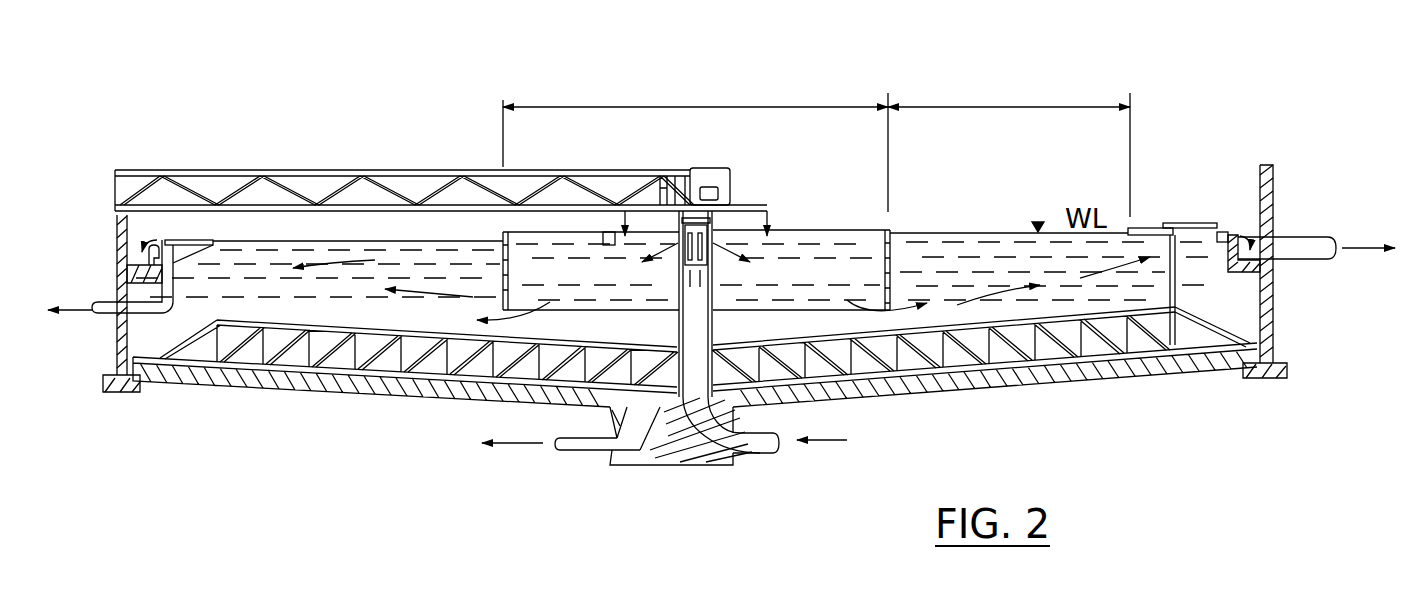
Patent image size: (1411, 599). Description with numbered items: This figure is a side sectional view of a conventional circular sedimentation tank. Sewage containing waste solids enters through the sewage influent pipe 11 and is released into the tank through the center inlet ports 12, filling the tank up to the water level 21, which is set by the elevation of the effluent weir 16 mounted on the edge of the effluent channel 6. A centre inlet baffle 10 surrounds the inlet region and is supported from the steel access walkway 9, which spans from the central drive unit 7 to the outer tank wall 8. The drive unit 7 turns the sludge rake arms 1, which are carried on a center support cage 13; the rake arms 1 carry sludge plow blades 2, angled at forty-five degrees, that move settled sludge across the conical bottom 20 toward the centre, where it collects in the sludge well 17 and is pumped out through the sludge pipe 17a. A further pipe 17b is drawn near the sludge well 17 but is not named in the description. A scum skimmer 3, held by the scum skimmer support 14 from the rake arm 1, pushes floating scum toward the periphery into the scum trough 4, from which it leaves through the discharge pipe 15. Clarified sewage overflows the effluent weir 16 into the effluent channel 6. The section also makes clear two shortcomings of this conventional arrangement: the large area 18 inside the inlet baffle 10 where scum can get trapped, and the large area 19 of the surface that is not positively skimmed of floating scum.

The sludge rake arms 1 is at (293, 322).
The sludge plow blades 2 is at (332, 374).
The scum skimmer 3 is at (1190, 224).
The scum trough 4 is at (196, 259).
The effluent channel 6 is at (134, 262).
The central drive unit 7 is at (690, 175).
The outer tank wall 8 is at (1274, 301).
The steel access walkway 9 is at (330, 168).
The centre inlet baffle 10 is at (890, 248).
The sewage influent pipe 11 is at (762, 455).
The center inlet ports 12 is at (678, 258).
The center support cage 13 is at (715, 325).
The scum skimmer support 14 is at (1168, 290).
The discharge pipe 15 is at (107, 302).
The effluent weir 16 is at (1232, 232).
The sludge well 17 is at (669, 465).
The sludge pipe 17a is at (577, 452).
The feed nozzle 17b is at (603, 240).
The large area where scum can get trapped 18 is at (695, 145).
The large area not positively skimmed 19 is at (1009, 147).
The conical bottom 20 is at (1073, 385).
The water level 21 is at (987, 231).